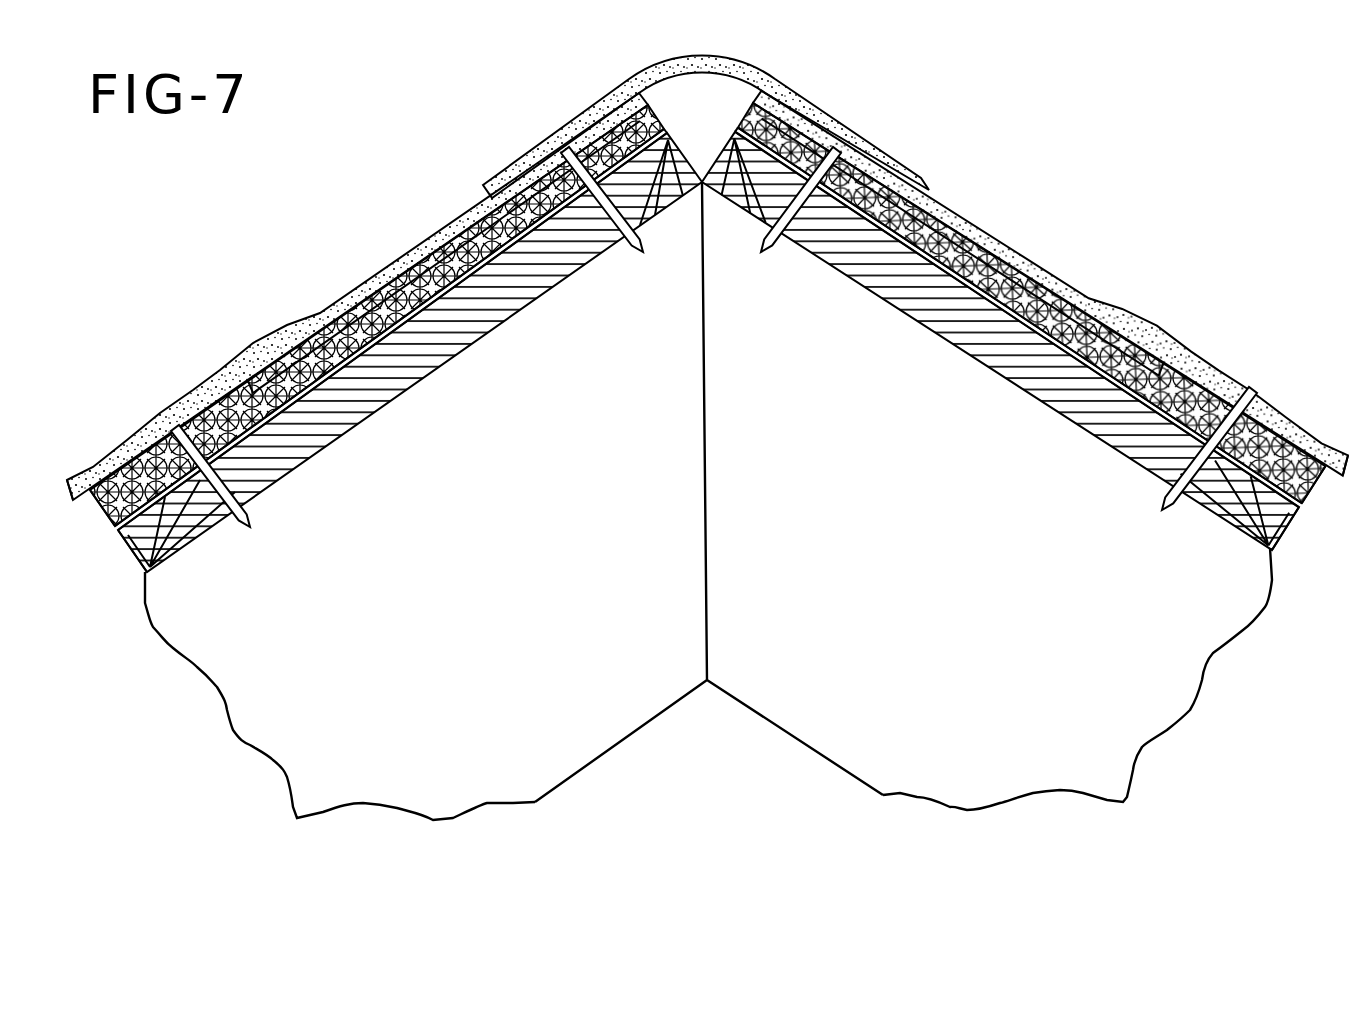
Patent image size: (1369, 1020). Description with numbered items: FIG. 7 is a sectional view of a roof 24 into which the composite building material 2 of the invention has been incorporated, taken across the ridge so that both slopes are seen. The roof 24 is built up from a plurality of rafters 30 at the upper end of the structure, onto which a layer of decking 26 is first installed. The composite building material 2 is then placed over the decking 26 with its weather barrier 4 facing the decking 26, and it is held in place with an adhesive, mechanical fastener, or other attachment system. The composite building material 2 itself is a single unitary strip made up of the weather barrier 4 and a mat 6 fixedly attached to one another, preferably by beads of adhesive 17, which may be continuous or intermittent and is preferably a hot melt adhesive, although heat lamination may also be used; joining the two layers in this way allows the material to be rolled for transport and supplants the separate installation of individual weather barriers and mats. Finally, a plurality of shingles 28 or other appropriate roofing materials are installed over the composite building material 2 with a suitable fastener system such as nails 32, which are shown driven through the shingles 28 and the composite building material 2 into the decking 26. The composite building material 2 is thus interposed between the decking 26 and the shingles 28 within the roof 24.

The roof 24 is at (1075, 130).
The composite building material 2 is at (88, 522).
The weather barrier 4 is at (112, 527).
The mat 6 is at (428, 262).
The adhesive 17 is at (362, 353).
The decking 26 is at (353, 413).
The shingles 28 is at (358, 290).
The rafters 30 is at (622, 700).
The nails 32 is at (636, 255).